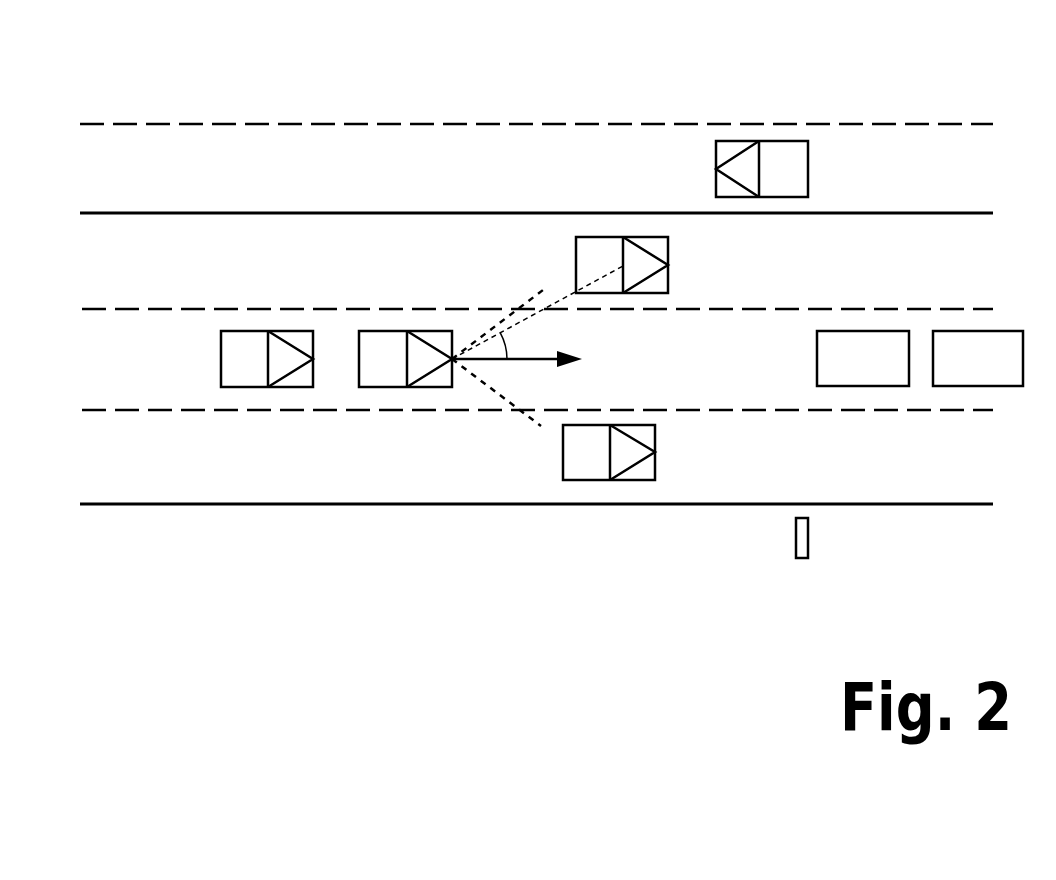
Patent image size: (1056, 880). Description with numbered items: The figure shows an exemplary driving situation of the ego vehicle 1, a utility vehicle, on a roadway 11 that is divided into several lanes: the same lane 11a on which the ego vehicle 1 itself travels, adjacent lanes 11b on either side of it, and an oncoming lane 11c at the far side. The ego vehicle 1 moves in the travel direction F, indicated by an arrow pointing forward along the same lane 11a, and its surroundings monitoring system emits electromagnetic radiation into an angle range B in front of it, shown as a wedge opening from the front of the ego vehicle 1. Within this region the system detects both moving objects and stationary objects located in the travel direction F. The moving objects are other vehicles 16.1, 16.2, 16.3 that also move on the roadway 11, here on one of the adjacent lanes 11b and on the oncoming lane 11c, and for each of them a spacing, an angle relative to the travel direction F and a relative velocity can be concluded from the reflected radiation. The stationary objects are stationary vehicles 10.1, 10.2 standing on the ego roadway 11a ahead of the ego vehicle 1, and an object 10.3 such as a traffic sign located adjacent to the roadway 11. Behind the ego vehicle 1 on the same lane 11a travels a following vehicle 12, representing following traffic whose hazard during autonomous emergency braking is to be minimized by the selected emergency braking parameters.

The ego vehicle 1 is at (359, 357).
The roadway 11 is at (338, 96).
The same lane 11a is at (153, 370).
The adjacent lane 11b is at (153, 273).
The oncoming lane 11c is at (153, 185).
The following vehicle 12 is at (268, 387).
The moving object 16.1 is at (576, 265).
The moving object 16.2 is at (563, 452).
The moving object 16.3 is at (808, 169).
The stationary object 10.1 is at (863, 386).
The stationary object 10.2 is at (977, 386).
The stationary object 10.3 is at (800, 558).
The travel direction F is at (517, 376).
The angle range B is at (500, 396).